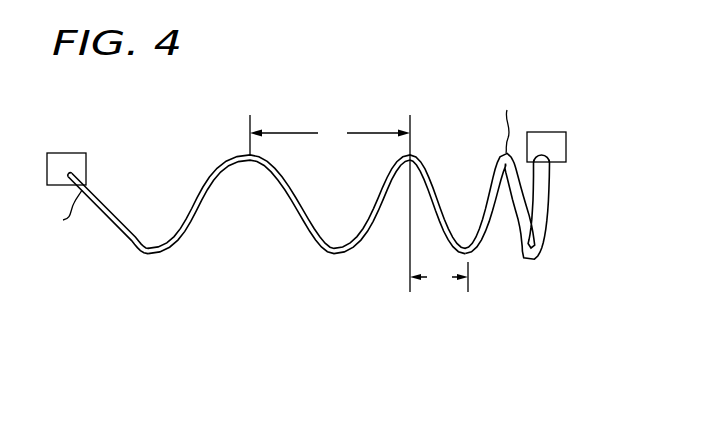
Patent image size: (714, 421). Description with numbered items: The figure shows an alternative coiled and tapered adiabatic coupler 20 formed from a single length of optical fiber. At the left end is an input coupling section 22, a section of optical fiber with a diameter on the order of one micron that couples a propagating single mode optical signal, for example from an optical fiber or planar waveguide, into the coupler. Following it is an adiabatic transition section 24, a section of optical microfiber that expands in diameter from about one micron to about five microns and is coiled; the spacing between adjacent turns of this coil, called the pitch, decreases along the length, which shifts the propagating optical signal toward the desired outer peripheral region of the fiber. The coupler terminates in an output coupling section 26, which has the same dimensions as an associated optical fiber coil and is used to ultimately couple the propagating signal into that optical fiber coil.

The adiabatic coupler 20 is at (572, 108).
The input coupling section 22 is at (101, 203).
The adiabatic transition section 24 is at (330, 255).
The output coupling section 26 is at (549, 203).